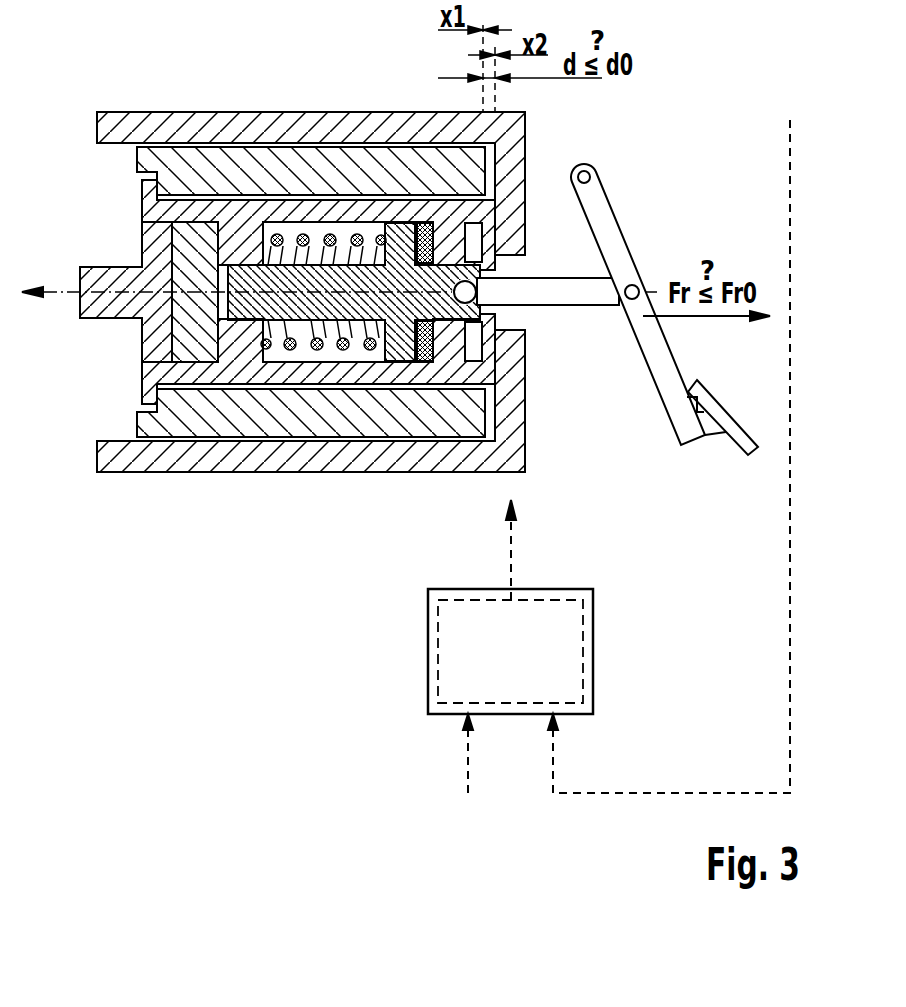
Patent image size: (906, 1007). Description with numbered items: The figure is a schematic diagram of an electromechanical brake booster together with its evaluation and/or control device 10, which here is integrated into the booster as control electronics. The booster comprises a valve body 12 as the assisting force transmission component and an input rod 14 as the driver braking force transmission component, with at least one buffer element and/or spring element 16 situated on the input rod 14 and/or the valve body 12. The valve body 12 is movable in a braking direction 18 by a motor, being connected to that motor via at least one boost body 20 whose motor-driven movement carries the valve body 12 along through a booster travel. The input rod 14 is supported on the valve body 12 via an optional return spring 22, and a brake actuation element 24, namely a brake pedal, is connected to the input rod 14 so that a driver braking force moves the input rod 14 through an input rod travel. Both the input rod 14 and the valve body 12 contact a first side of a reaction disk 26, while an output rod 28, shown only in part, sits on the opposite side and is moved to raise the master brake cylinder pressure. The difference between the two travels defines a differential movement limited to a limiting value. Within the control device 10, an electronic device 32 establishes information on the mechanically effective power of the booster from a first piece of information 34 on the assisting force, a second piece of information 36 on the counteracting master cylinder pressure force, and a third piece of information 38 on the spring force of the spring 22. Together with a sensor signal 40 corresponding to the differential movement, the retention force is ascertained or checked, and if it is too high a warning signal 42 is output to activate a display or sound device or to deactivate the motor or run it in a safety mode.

The evaluation and/or control device 10 is at (543, 651).
The valve body 12 is at (497, 372).
The input rod 14 is at (494, 318).
The buffer element and/or spring element 16 is at (432, 357).
The braking direction 18 is at (58, 297).
The boost body 20 is at (248, 413).
The return spring 22 is at (312, 347).
The brake actuation element 24 is at (606, 218).
The reaction disk 26 is at (193, 352).
The output rod 28 is at (107, 305).
The electronic device 32 is at (585, 622).
The first piece of information 34 is at (406, 753).
The second piece of information 36 is at (406, 753).
The third piece of information 38 is at (466, 758).
The sensor signal 40 is at (555, 758).
The warning signal 42 is at (513, 553).